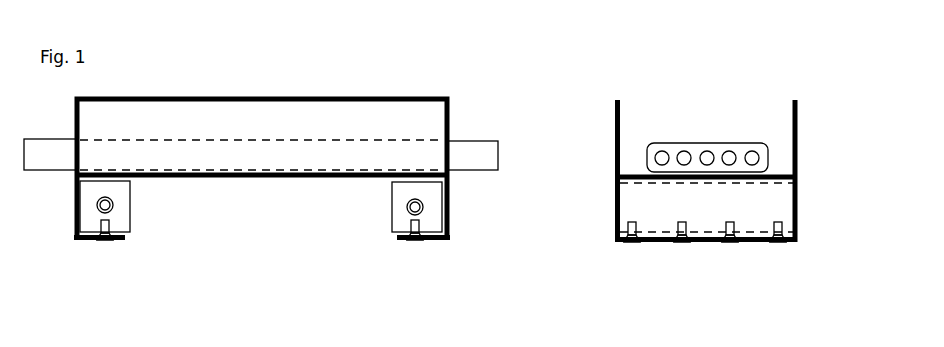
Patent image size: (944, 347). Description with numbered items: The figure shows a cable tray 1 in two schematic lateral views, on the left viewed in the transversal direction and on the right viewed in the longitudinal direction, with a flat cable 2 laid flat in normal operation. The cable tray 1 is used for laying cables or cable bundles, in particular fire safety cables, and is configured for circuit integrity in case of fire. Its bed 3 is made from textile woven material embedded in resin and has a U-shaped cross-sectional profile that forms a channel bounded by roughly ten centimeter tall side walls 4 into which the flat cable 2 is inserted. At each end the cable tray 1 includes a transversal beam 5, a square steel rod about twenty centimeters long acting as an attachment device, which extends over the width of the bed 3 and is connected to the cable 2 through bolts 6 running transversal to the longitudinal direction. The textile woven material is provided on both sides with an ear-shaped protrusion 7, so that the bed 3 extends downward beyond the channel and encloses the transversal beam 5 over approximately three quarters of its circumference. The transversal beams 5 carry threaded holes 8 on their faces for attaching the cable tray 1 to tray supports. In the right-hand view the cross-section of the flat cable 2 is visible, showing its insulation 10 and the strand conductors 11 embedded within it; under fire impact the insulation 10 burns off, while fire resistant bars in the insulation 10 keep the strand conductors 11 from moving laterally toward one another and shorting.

The cable tray 1 is at (452, 82).
The flat cable 2 is at (41, 138).
The bed 3 is at (282, 179).
The side walls 4 is at (251, 97).
The transversal beam 5 is at (131, 192).
The bolts 6 is at (105, 243).
The protrusion 7 is at (72, 239).
The threaded holes 8 is at (112, 208).
The insulation 10 is at (658, 143).
The strand conductors 11 is at (681, 143).